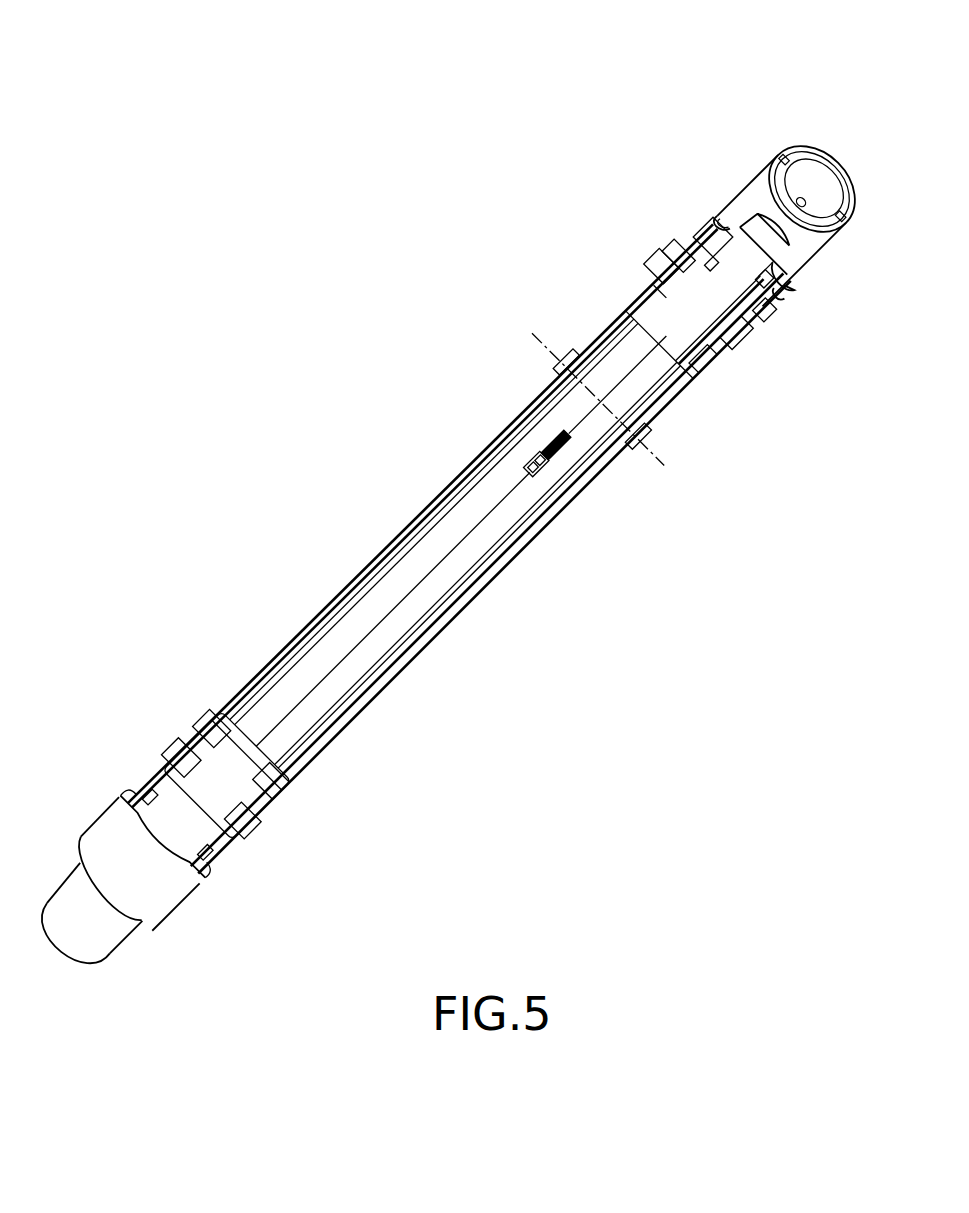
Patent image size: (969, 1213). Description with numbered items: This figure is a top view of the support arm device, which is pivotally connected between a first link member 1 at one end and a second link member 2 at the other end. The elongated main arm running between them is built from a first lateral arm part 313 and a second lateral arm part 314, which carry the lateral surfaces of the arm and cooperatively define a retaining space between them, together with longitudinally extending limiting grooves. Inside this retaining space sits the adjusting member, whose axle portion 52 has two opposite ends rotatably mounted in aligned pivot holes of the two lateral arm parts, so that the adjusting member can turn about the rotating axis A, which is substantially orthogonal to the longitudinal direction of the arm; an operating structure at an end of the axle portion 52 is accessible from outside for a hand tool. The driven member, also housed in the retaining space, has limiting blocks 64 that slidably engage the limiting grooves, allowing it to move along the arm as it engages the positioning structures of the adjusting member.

The first link member 1 is at (151, 955).
The second link member 2 is at (800, 138).
The axle portion 52 is at (574, 356).
The limiting blocks 64 is at (566, 448).
The first lateral arm part 313 is at (410, 610).
The second lateral arm part 314 is at (442, 538).
The rotating axis A is at (609, 415).